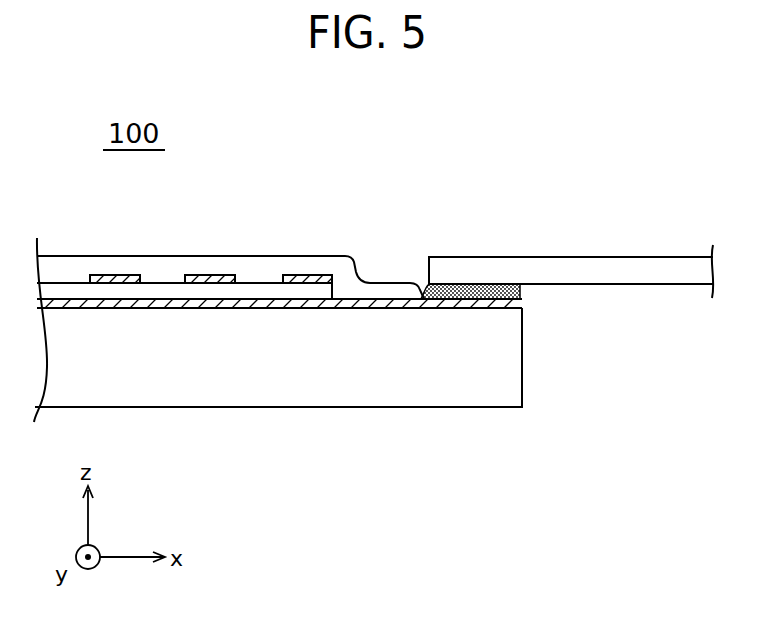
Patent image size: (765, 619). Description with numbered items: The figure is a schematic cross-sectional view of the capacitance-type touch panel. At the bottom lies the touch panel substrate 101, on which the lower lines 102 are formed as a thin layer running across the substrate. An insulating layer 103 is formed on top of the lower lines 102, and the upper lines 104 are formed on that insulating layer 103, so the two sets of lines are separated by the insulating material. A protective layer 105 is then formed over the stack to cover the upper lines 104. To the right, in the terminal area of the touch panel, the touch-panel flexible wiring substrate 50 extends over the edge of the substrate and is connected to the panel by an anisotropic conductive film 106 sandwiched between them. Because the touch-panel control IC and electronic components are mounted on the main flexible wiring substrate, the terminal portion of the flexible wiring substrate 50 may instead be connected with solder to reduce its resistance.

The touch panel substrate 101 is at (306, 383).
The lower lines 102 is at (65, 300).
The insulating layer 103 is at (150, 292).
The upper lines 104 is at (225, 275).
The protective layer 105 is at (298, 255).
The anisotropic conductive film 106 is at (522, 294).
The touch-panel flexible wiring substrate 50 is at (583, 255).